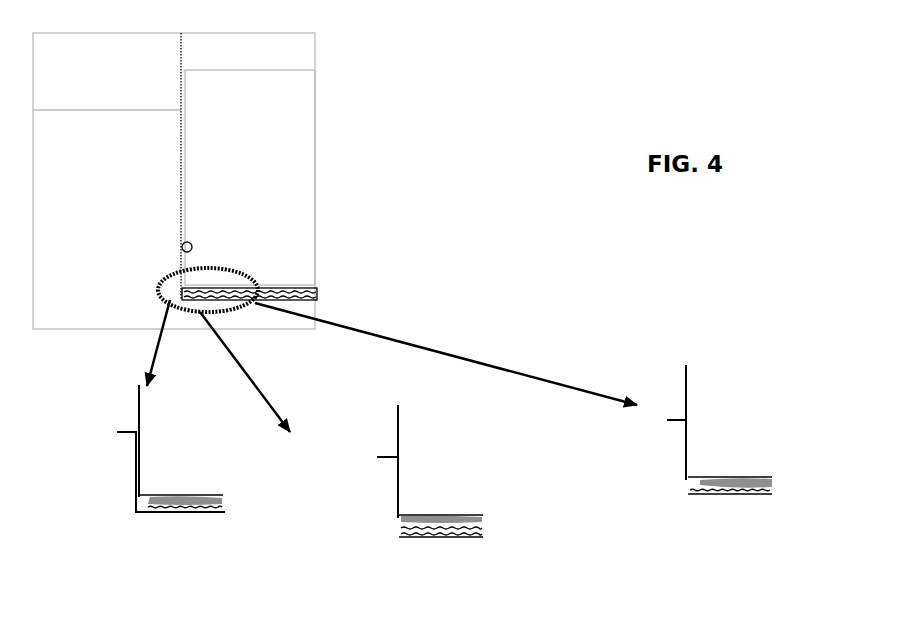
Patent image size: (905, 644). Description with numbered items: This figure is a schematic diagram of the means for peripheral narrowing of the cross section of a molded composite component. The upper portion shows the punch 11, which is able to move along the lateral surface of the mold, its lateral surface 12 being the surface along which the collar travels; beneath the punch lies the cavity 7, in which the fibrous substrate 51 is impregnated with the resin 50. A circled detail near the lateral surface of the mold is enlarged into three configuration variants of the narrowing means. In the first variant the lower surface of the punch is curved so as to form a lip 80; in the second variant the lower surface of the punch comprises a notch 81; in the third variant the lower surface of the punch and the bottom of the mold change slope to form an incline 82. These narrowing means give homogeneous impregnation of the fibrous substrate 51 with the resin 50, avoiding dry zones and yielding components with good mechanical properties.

The punch 11 is at (305, 127).
The lateral surface of the punch 12 is at (188, 202).
The cavity 7 is at (317, 292).
The fibrous substrate 51 is at (317, 295).
The resin 50 is at (762, 482).
The lip 80 is at (137, 496).
The notch 81 is at (435, 515).
The incline 82 is at (717, 492).